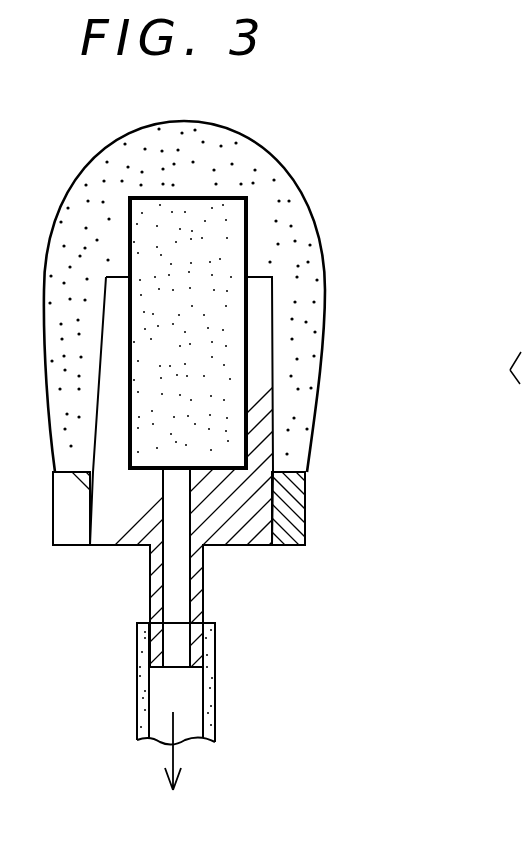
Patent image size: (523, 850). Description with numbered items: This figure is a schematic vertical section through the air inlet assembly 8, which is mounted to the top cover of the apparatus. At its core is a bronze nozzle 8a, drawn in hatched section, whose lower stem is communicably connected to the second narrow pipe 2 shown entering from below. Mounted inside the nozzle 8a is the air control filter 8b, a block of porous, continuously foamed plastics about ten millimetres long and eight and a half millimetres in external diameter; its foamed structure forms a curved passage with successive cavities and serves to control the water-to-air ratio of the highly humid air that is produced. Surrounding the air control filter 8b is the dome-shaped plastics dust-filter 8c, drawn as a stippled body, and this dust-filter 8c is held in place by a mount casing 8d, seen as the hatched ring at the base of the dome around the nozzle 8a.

The air inlet assembly 8 is at (276, 129).
The bronze nozzle 8a is at (235, 537).
The air control filter 8b is at (230, 233).
The plastics dust-filter 8c is at (310, 345).
The mount casing 8d is at (298, 517).
The second narrow pipe 2 is at (210, 707).